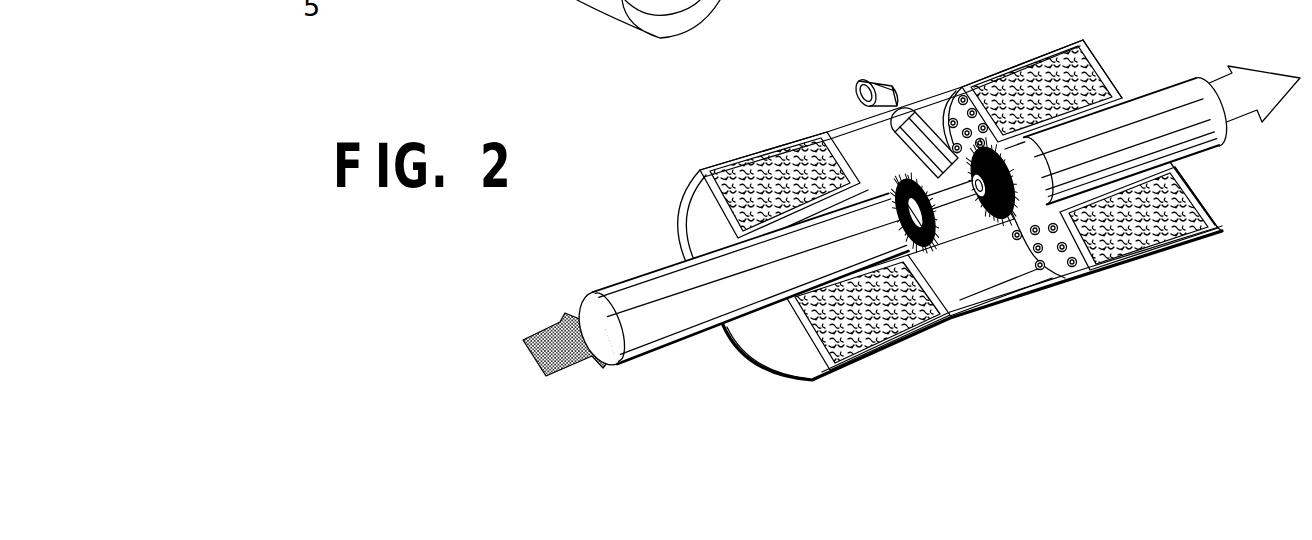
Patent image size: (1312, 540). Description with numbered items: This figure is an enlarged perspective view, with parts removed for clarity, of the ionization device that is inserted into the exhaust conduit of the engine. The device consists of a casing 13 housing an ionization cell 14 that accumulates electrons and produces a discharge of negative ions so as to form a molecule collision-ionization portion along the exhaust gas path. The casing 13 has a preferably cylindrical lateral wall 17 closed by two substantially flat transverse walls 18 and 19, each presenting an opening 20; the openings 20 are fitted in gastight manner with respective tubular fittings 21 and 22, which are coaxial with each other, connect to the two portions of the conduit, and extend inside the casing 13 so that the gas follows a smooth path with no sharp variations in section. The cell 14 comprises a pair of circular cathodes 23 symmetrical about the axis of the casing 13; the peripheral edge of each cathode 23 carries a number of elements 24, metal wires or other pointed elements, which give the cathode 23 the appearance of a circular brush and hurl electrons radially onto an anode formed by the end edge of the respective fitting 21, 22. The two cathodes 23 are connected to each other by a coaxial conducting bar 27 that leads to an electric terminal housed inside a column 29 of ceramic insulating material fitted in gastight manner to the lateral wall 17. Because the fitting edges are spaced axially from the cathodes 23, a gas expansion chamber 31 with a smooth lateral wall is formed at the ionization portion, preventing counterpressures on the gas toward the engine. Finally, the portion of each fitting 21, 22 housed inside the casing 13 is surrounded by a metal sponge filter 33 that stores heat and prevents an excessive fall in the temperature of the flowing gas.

The casing 13 is at (957, 72).
The ionization cell 14 is at (984, 264).
The lateral wall 17 is at (1082, 279).
The transverse wall 18 is at (777, 343).
The transverse wall 19 is at (1213, 211).
The opening 20 is at (929, 203).
The tubular fitting 21 is at (683, 313).
The tubular fitting 22 is at (1208, 130).
The cathode 23 is at (940, 232).
The pointed elements 24 is at (897, 200).
The conducting bar 27 is at (877, 150).
The column 29 is at (940, 160).
The gas expansion chamber 31 is at (1018, 283).
The metal sponge filter 33 is at (766, 197).